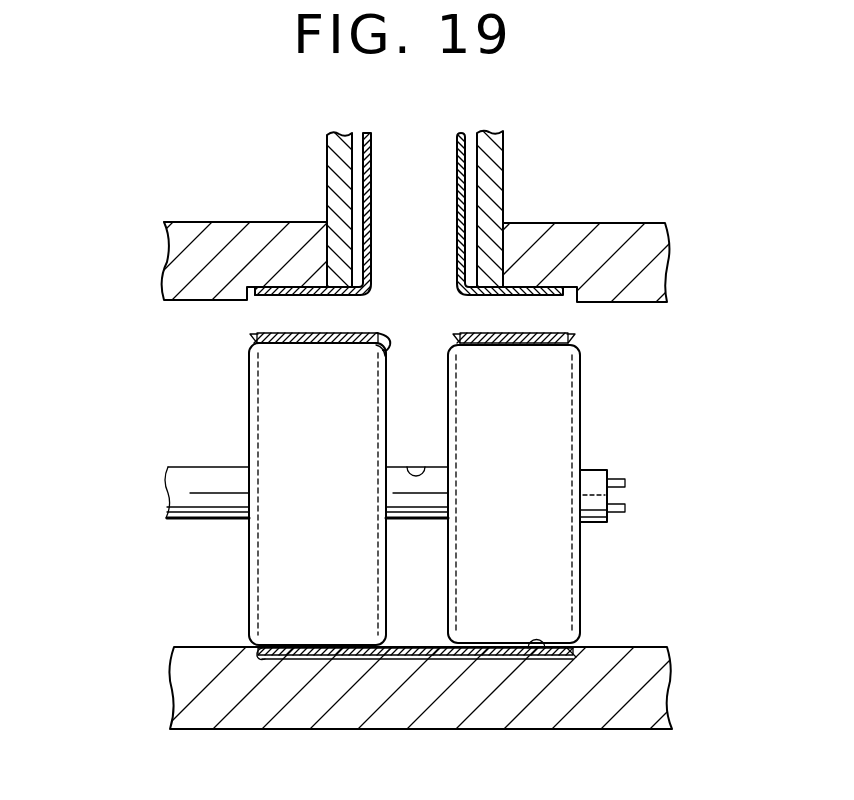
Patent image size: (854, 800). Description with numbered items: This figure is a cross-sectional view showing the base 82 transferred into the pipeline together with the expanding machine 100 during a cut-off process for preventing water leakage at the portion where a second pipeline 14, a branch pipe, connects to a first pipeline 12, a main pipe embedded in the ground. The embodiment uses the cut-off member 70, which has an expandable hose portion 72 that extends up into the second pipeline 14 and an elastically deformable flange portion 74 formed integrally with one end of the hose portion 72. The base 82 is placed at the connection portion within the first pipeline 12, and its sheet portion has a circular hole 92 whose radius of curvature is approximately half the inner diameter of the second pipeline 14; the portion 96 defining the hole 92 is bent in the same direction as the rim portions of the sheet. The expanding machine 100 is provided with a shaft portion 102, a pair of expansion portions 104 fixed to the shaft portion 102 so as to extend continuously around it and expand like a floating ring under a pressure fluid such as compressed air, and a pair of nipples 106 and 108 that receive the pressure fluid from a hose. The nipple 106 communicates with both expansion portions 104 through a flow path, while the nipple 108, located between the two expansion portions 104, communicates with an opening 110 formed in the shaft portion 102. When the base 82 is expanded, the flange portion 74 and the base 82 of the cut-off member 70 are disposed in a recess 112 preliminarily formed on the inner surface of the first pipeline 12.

The first pipeline 12 is at (613, 235).
The second pipeline 14 is at (505, 167).
The cut-off member 70 is at (345, 170).
The hose portion 72 is at (366, 131).
The flange portion 74 is at (276, 292).
The base 82 is at (296, 351).
The circular hole 92 is at (383, 353).
The portion defining the hole 96 is at (384, 332).
The expanding machine 100 is at (585, 383).
The shaft portion 102 is at (193, 467).
The expansion portions 104 is at (271, 585).
The nipple 106 is at (618, 477).
The nipple 108 is at (623, 509).
The opening 110 is at (418, 466).
The recess 112 is at (540, 660).